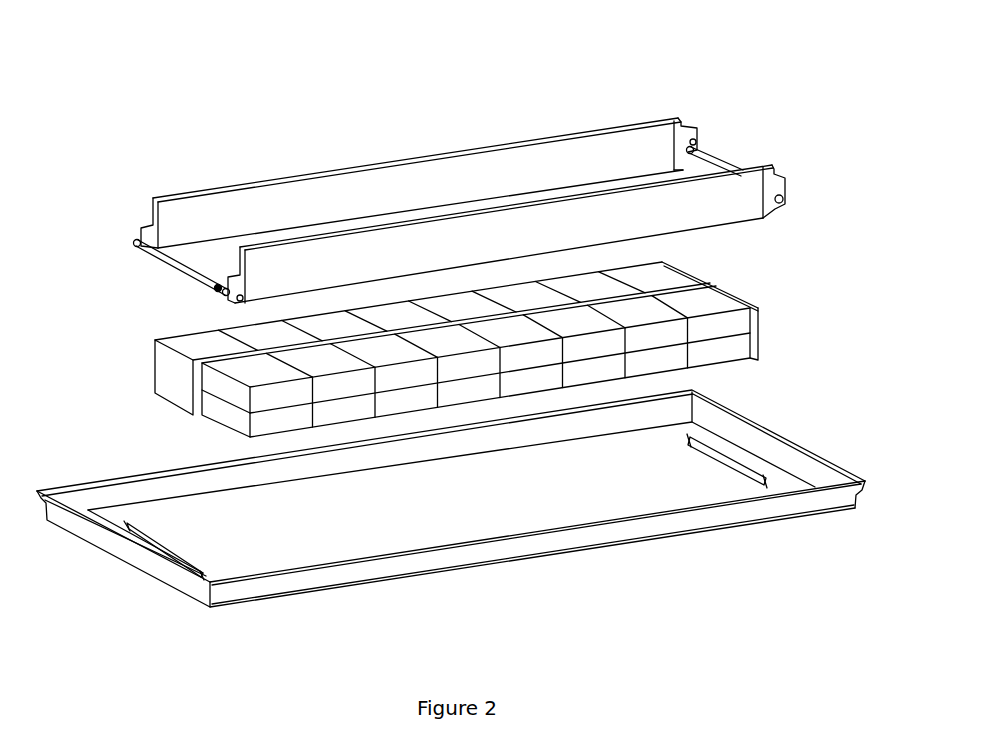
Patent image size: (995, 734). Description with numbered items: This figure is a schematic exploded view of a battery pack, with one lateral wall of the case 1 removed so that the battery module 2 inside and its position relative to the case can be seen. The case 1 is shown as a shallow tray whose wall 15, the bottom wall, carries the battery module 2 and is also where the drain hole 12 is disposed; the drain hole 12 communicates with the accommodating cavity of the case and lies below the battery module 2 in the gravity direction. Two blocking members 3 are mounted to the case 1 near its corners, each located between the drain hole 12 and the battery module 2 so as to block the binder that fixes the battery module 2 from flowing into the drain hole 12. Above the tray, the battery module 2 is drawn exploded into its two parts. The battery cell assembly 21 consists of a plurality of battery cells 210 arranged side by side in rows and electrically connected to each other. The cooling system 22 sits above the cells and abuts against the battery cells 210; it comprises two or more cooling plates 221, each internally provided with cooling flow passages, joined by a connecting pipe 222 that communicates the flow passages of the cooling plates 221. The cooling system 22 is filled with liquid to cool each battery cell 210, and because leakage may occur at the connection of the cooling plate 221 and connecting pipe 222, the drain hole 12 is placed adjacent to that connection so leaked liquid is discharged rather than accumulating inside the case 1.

The case 1 is at (800, 472).
The drain hole 12 is at (772, 485).
The wall 15 is at (338, 542).
The blocking member 3 is at (160, 547).
The battery module 2 is at (792, 142).
The battery cell assembly 21 is at (856, 245).
The battery cell 210 is at (665, 276).
The cooling system 22 is at (625, 46).
The cooling plate 221 is at (580, 160).
The connecting pipe 222 is at (700, 157).